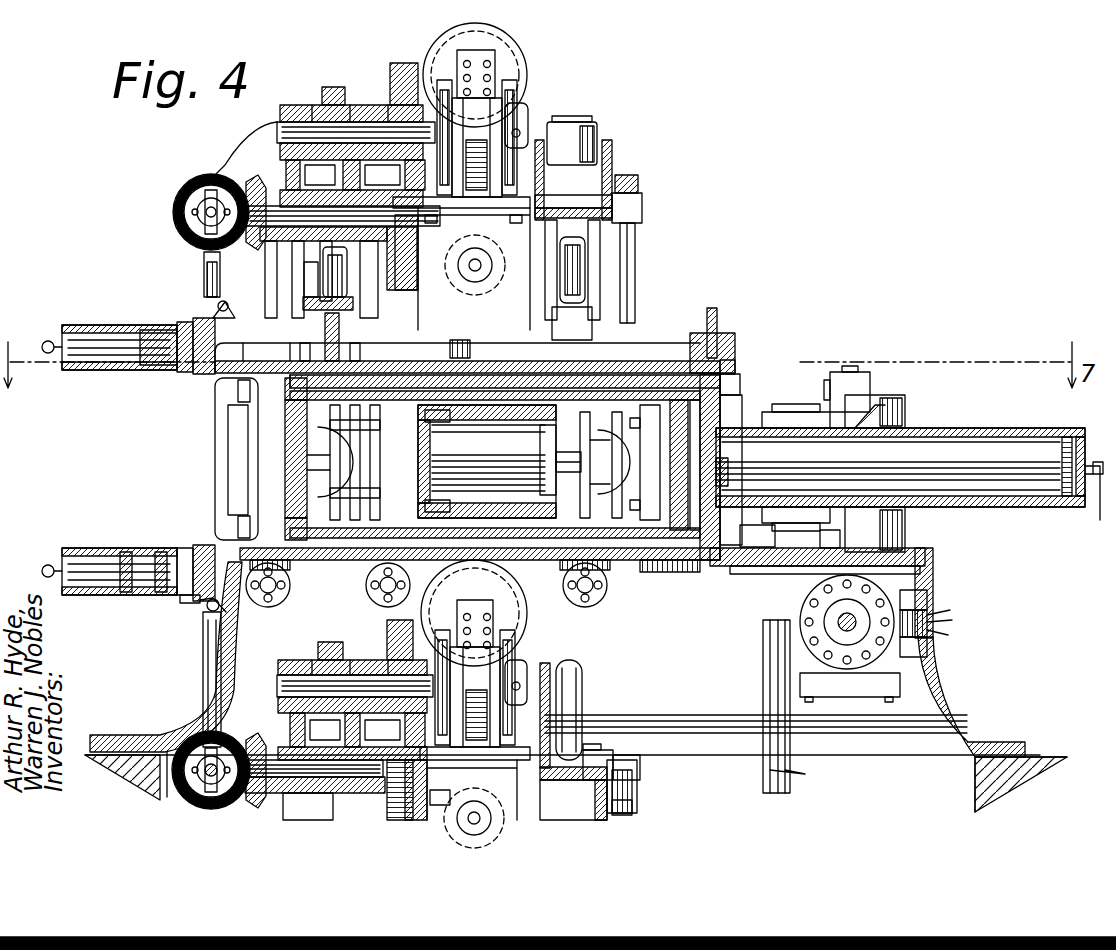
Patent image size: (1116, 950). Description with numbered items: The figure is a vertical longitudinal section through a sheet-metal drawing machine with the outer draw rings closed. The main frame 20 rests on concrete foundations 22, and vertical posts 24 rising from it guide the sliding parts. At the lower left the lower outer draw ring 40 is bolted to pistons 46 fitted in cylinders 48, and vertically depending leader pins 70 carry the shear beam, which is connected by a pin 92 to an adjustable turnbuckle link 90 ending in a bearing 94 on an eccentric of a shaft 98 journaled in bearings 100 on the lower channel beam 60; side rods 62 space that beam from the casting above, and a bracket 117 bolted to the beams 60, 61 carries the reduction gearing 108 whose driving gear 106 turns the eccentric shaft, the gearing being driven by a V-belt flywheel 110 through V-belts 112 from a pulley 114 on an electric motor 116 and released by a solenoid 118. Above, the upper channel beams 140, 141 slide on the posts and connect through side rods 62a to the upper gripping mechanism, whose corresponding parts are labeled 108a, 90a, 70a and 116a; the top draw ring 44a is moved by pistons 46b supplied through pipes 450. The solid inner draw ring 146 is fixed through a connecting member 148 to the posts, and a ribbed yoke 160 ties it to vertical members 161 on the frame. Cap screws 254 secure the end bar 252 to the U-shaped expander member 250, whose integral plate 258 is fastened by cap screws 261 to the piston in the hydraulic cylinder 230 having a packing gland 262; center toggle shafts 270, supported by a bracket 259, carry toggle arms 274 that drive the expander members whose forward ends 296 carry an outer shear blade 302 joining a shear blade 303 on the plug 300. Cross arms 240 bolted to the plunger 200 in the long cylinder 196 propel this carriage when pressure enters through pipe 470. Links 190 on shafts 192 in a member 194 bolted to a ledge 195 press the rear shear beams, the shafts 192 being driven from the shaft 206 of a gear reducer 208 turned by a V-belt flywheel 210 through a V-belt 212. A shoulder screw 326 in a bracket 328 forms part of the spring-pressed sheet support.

The upper clamp column 108a is at (505, 92).
The vertical posts 24 is at (580, 125).
The upper channel beam 140 is at (613, 160).
The side rods 62a is at (630, 258).
The upper push rod 90a is at (202, 272).
The upper channel beam 141 is at (300, 287).
The upper roller 116a is at (468, 280).
The inner draw ring 146 is at (250, 356).
The connecting member 148 is at (342, 339).
The ribbed yoke 160 is at (718, 332).
The cap screws 254 is at (652, 370).
The main frame 20 is at (332, 560).
The expander member 250 is at (525, 380).
The forward ends 296 is at (222, 440).
The outer shear blade 302 is at (232, 398).
The shear blade 303 is at (300, 388).
The plug 300 is at (305, 462).
The toggle arms 274 is at (322, 444).
The bracket 259 is at (315, 486).
The hydraulic cylinder 230 is at (508, 412).
The packing gland 262 is at (440, 412).
The plate 258 is at (420, 452).
The center toggle shafts 270 is at (418, 434).
The cap screws 261 is at (480, 416).
The cross arms 240 is at (722, 404).
The vertical members 161 is at (735, 385).
The long cylinder 196 is at (990, 430).
The plunger 200 is at (930, 448).
The end bar 252 is at (720, 452).
The pipe 470 is at (1092, 510).
The links 190 is at (797, 412).
The shafts 192 is at (850, 372).
The member 194 is at (892, 396).
The ledge 195 is at (776, 572).
The pistons 46b is at (108, 326).
The pipes 450 is at (46, 342).
The upper gland 70a is at (183, 322).
The top draw ring 44a is at (178, 368).
The pistons 46 is at (105, 556).
The cylinders 48 is at (80, 550).
The lower outer draw ring 40 is at (188, 546).
The leader pins 70 is at (188, 598).
The pin 92 is at (208, 610).
The turnbuckle link 90 is at (205, 660).
The bracket 328 is at (275, 590).
The shoulder screw 326 is at (265, 596).
The V-belt flywheel 110 is at (490, 584).
The reduction gearing 108 is at (483, 660).
The solenoid 118 is at (522, 672).
The electric motor 116 is at (522, 808).
The bracket 117 is at (440, 780).
The pulley 114 is at (430, 798).
The driving gear 106 is at (390, 632).
The channel beam 61 is at (300, 735).
The shaft 98 is at (290, 795).
The V-belts 112 is at (588, 748).
The bearing 94 is at (615, 742).
The bearings 100 is at (640, 764).
The side rods 62 is at (628, 774).
The lower channel beam 60 is at (630, 812).
The V-belt flywheel 210 is at (765, 638).
The V-belt 212 is at (801, 773).
The shaft 206 is at (880, 620).
The gear reducer 208 is at (832, 684).
The concrete foundations 22 is at (1040, 772).